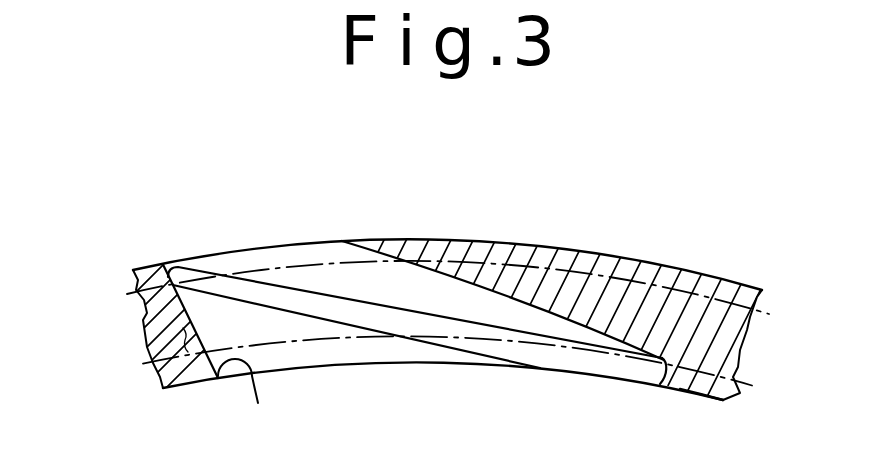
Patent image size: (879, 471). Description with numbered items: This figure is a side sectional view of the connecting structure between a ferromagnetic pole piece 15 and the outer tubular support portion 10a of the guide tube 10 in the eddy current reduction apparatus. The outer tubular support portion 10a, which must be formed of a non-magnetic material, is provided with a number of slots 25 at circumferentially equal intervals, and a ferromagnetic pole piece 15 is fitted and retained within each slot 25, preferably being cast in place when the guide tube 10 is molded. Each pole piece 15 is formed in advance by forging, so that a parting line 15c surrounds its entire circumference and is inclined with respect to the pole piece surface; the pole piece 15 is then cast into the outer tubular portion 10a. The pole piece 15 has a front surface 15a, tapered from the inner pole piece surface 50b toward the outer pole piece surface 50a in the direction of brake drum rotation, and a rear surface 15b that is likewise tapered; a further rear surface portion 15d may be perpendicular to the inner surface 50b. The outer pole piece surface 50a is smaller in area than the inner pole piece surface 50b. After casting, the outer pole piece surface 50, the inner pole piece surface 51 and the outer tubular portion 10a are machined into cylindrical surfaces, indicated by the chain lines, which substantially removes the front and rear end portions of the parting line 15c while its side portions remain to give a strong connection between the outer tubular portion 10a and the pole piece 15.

The guide tube 10 is at (421, 299).
The outer tubular support portion 10a is at (102, 329).
The ferromagnetic pole piece 15 is at (415, 265).
The front surface 15a is at (191, 324).
The rear surface 15b is at (503, 265).
The parting line 15c is at (356, 345).
The rear surface portion 15d is at (664, 282).
The slot 25 is at (252, 397).
The outer pole piece surface 50 is at (575, 325).
The outer pole piece surface 50a is at (448, 251).
The inner pole piece surface 50b is at (447, 373).
The inner pole piece surface 51 is at (701, 414).